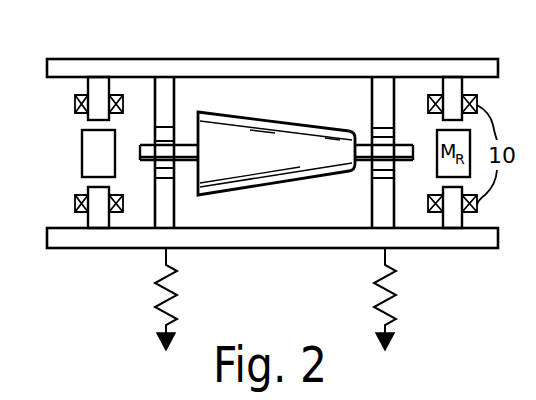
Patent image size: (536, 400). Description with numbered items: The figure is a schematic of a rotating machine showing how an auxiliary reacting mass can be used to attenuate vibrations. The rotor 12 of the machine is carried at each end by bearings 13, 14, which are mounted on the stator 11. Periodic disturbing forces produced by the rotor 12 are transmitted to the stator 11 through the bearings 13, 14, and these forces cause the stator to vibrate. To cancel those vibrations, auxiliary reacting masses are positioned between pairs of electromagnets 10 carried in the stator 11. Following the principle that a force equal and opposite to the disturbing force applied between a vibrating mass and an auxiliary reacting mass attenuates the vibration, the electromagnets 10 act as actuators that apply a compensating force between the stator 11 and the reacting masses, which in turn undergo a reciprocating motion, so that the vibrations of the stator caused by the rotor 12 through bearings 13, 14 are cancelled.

The electromagnets 10 is at (75, 105).
The stator 11 is at (288, 68).
The rotor 12 is at (267, 162).
The bearing 13 is at (165, 138).
The bearing 14 is at (372, 128).